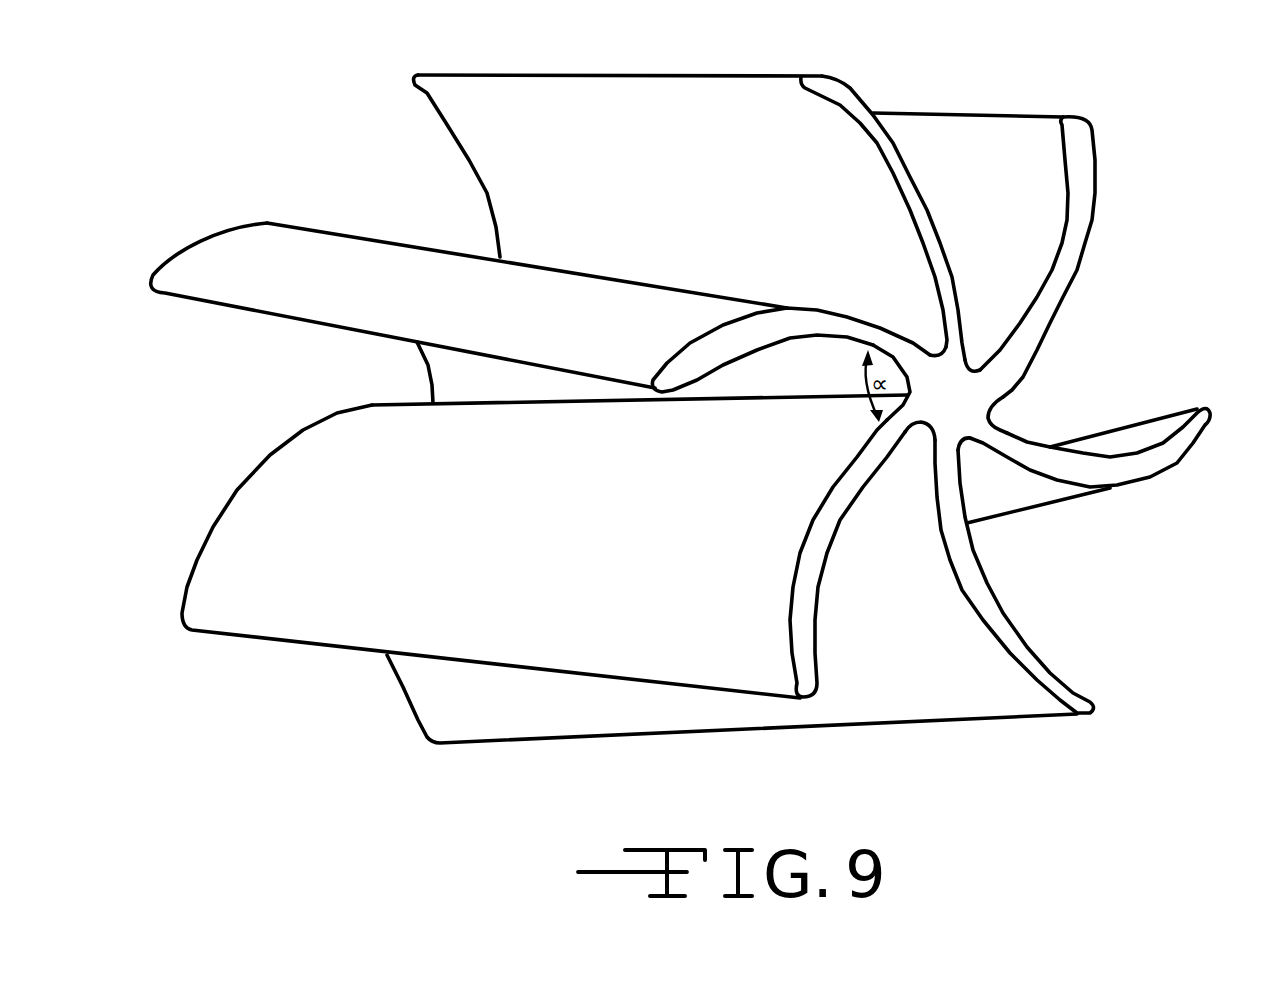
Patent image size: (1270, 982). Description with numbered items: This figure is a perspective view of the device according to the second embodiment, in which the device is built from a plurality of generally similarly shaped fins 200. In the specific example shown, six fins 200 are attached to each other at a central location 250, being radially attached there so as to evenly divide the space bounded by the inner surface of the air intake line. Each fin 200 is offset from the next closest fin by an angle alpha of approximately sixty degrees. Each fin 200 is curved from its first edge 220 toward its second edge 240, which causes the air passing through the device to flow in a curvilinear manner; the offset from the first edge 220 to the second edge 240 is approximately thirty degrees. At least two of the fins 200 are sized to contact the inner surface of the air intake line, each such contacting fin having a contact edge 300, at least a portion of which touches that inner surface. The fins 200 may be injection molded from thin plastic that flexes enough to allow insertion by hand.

The contact edge 300 is at (760, 75).
The second edge 240 is at (455, 127).
The first edge 220 is at (1090, 237).
The central location 250 is at (977, 400).
The fin 200 is at (243, 636).